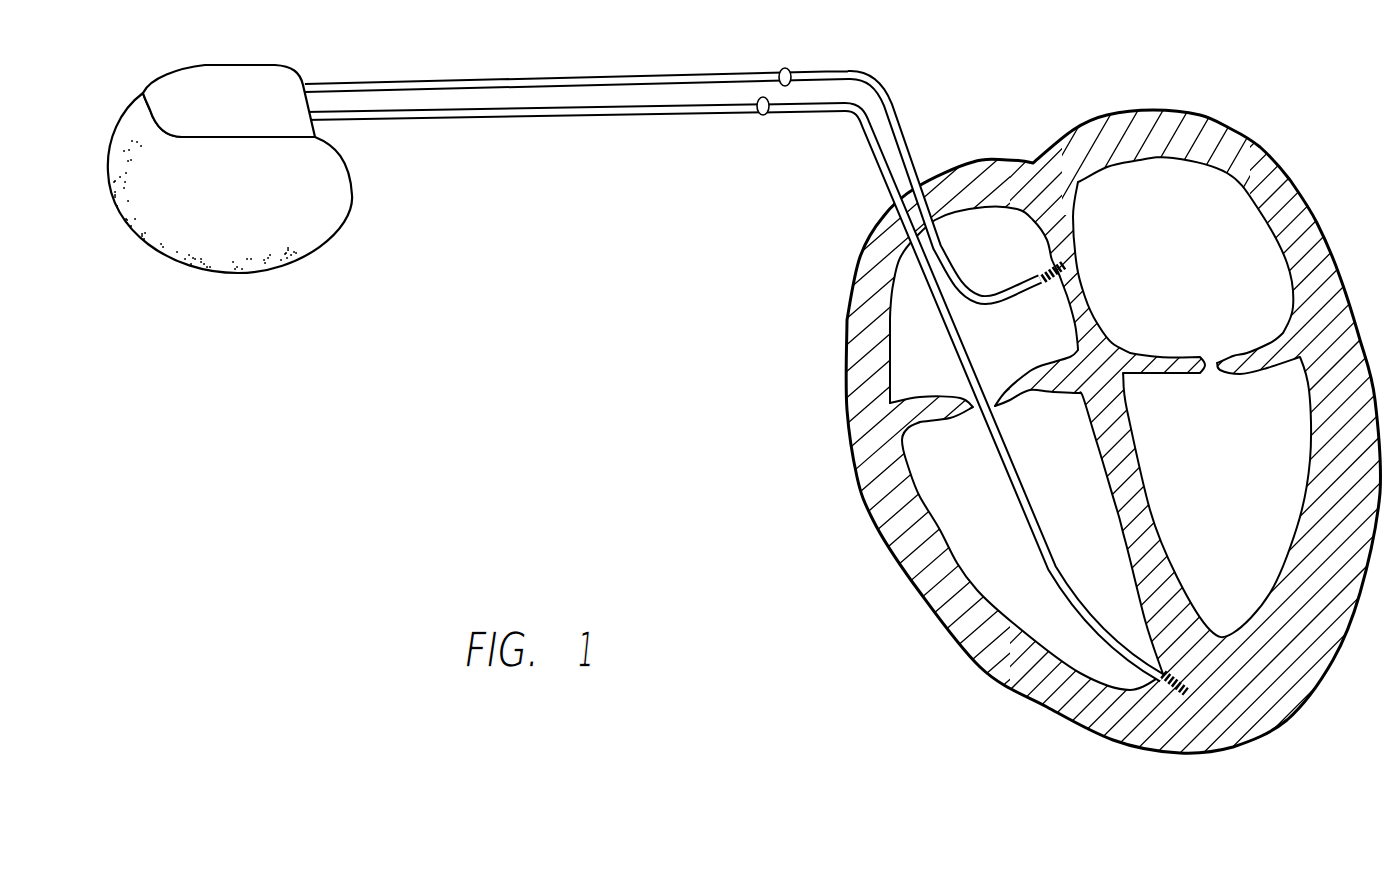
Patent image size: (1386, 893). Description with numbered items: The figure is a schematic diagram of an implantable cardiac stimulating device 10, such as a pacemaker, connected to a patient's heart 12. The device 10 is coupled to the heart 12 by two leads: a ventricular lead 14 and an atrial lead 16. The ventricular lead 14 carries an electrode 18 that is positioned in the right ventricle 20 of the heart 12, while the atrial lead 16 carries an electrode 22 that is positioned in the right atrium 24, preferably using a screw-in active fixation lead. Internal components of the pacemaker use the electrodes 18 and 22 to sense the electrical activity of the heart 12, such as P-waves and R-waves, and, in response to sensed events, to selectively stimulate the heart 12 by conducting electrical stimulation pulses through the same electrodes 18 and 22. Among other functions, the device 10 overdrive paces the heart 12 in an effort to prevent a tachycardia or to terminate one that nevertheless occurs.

The implantable cardiac stimulating device 10 is at (300, 266).
The heart 12 is at (1260, 150).
The ventricular lead 14 is at (762, 115).
The atrial lead 16 is at (787, 68).
The electrode 18 is at (1127, 692).
The right ventricle 20 is at (1020, 602).
The electrode 22 is at (1054, 262).
The right atrium 24 is at (937, 375).